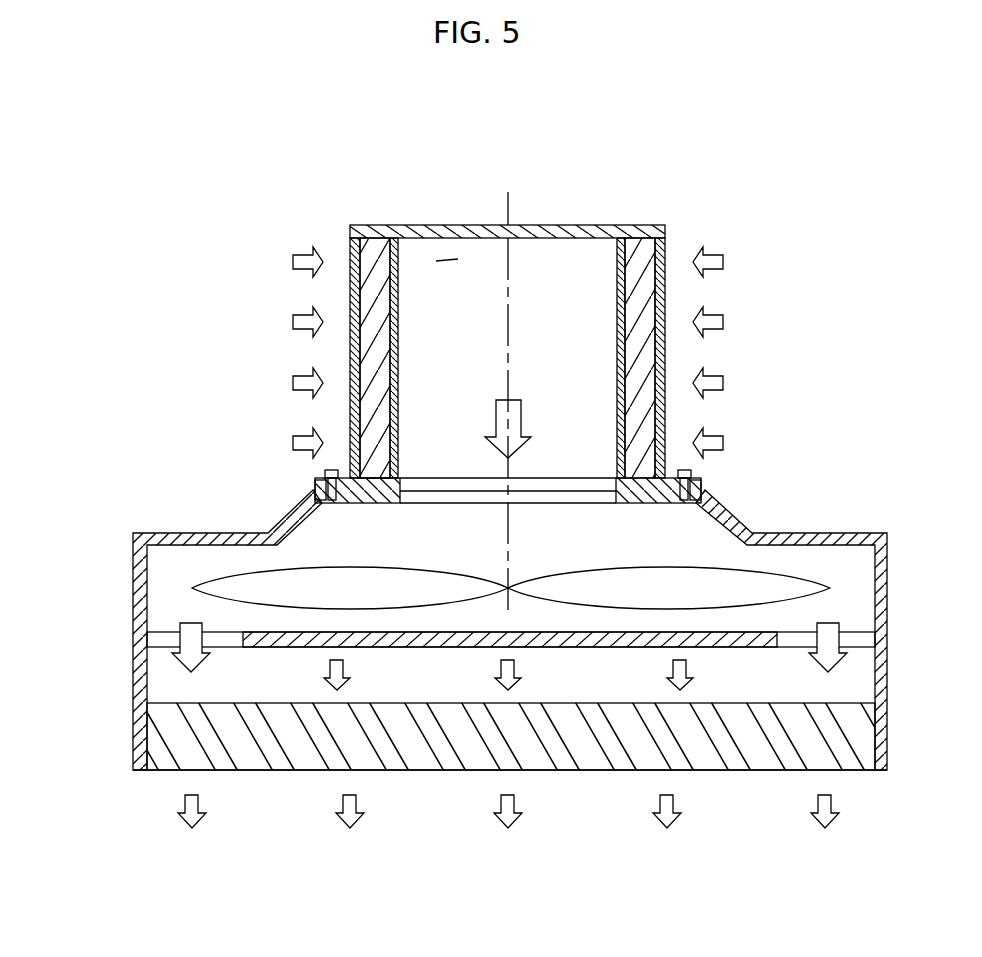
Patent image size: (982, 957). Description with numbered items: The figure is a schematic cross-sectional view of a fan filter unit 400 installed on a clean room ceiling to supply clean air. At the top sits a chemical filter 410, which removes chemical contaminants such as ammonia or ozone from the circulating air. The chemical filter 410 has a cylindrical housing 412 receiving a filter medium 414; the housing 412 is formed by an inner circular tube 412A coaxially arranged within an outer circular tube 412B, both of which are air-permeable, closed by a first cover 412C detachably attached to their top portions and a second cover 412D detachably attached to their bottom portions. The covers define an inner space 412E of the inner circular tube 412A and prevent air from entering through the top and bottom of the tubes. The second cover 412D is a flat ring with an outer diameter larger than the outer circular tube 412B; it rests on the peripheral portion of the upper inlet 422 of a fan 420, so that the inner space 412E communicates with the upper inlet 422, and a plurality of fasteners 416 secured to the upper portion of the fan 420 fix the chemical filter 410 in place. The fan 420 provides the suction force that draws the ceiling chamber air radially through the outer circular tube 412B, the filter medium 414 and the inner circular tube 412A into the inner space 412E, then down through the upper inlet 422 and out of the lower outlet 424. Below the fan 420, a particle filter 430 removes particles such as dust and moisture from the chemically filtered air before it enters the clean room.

The fan filter unit 400 is at (218, 300).
The chemical filter 410 is at (665, 273).
The cylindrical housing 412 is at (577, 181).
The inner circular tube 412A is at (625, 354).
The outer circular tube 412B is at (665, 413).
The first cover 412C is at (547, 232).
The second cover 412D is at (703, 481).
The inner space 412E is at (446, 258).
The filter medium 414 is at (366, 357).
The fasteners 416 is at (316, 482).
The fan 420 is at (205, 590).
The upper inlet 422 is at (443, 498).
The lower outlet 424 is at (155, 637).
The particle filter 430 is at (160, 735).